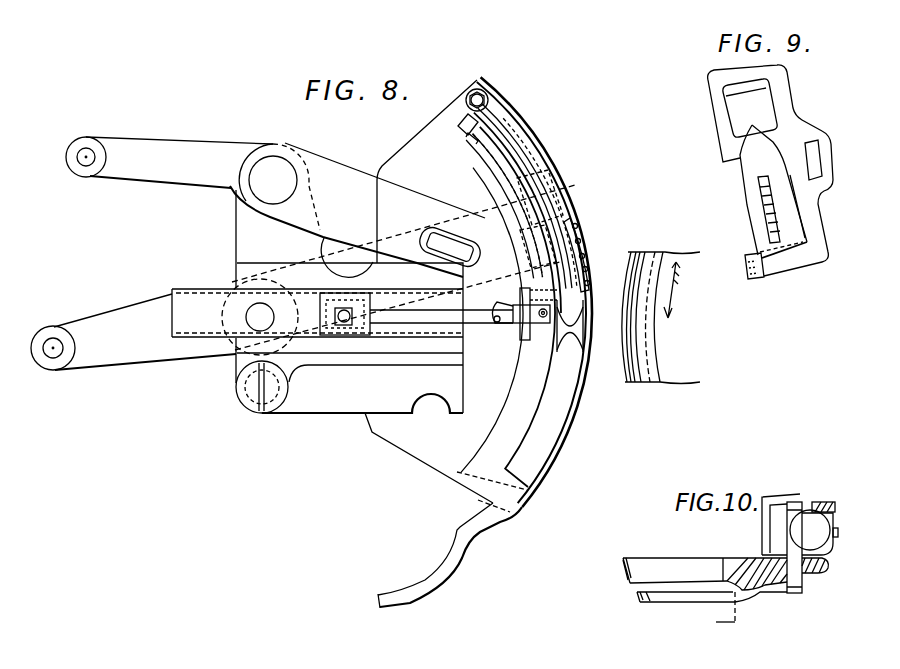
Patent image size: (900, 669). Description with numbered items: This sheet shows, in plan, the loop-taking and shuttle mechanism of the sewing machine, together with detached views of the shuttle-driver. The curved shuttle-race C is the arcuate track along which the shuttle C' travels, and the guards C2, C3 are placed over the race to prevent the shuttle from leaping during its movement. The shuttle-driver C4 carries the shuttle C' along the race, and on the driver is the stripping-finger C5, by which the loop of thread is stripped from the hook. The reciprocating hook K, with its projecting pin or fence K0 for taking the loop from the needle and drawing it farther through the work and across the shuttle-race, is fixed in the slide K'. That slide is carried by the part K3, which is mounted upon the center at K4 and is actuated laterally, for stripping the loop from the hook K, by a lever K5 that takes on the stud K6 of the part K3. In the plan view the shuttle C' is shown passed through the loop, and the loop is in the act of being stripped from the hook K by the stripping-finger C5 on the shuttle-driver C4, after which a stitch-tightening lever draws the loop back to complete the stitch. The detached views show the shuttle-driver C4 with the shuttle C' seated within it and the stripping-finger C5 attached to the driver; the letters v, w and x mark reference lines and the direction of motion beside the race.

In FIG. 8, the curved shuttle-race C is at (454, 344).
In FIG. 10, the curved shuttle-race C is at (705, 590).
In FIG. 8, the shuttle C' is at (587, 283).
In FIG. 9, the shuttle C' is at (773, 191).
In FIG. 10, the shuttle C' is at (829, 541).
In FIG. 8, the guard over the race C2 is at (482, 112).
In FIG. 10, the guard over the race C2 is at (827, 495).
In FIG. 8, the guard over the race C3 is at (533, 292).
In FIG. 8, the shuttle-driver C4 is at (497, 164).
In FIG. 9, the shuttle-driver C4 is at (708, 84).
In FIG. 10, the shuttle-driver C4 is at (791, 593).
In FIG. 8, the stripping-finger C5 is at (525, 324).
In FIG. 9, the stripping-finger C5 is at (750, 279).
In FIG. 10, the stripping-finger C5 is at (778, 505).
In FIG. 8, the reciprocating hook K is at (435, 314).
In FIG. 8, the slide K' is at (317, 317).
In FIG. 8, the projecting pin or fence K0 is at (503, 326).
In FIG. 8, the part carrying the slide K3 is at (376, 367).
In FIG. 8, the center K4 is at (256, 410).
In FIG. 8, the lever K5 is at (357, 210).
In FIG. 8, the stud K6 is at (449, 247).
In FIG. 8, the direction line v is at (594, 250).
In FIG. 10, the direction line v is at (836, 540).
In FIG. 8, the reference line w is at (645, 302).
In FIG. 8, the direction of motion x is at (661, 318).